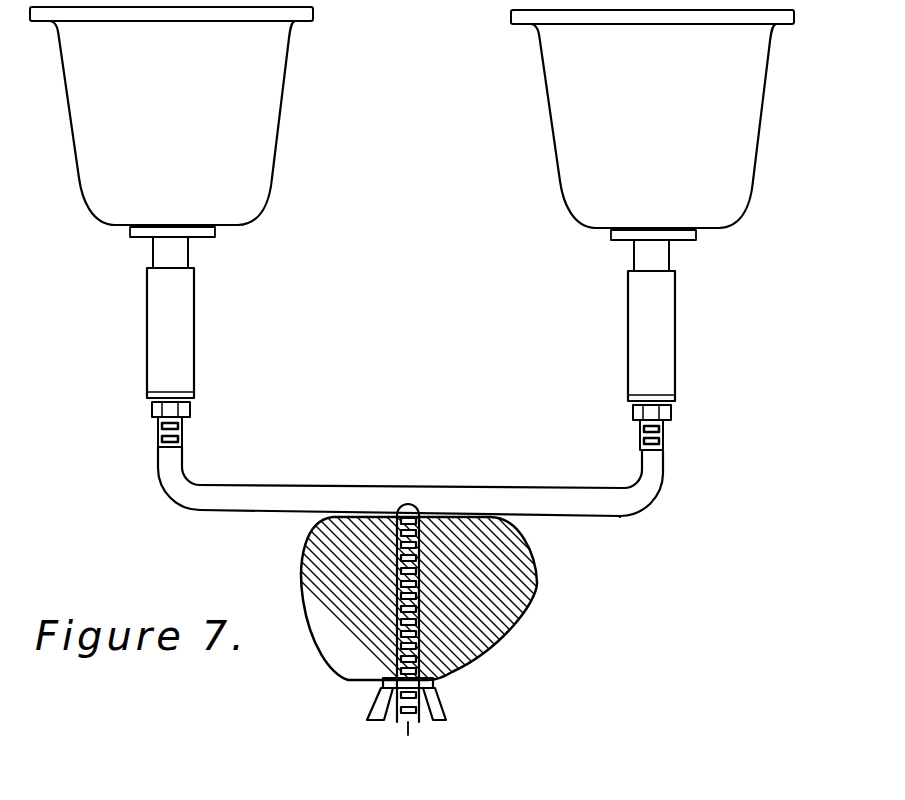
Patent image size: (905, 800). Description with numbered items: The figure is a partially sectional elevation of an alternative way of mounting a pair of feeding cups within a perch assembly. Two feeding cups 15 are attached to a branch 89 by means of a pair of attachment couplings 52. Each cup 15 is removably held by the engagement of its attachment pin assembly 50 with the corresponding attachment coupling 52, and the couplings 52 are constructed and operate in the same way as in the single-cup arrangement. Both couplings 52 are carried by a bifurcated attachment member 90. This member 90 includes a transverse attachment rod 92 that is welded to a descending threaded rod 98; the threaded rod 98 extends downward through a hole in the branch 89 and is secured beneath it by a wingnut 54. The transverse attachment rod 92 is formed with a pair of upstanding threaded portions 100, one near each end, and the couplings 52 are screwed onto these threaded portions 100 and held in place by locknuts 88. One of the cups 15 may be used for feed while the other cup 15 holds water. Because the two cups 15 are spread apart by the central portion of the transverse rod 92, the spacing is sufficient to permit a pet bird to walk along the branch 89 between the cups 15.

The feeding cup 15 is at (275, 137).
The attachment pin assembly 50 is at (189, 252).
The attachment coupling 52 is at (195, 337).
The locknut 88 is at (191, 413).
The upstanding threaded portion 100 is at (183, 432).
The bifurcated attachment member 90 is at (532, 486).
The transverse attachment rod 92 is at (618, 517).
The branch 89 is at (533, 605).
The descending threaded rod 98 is at (408, 735).
The wingnut 54 is at (443, 698).